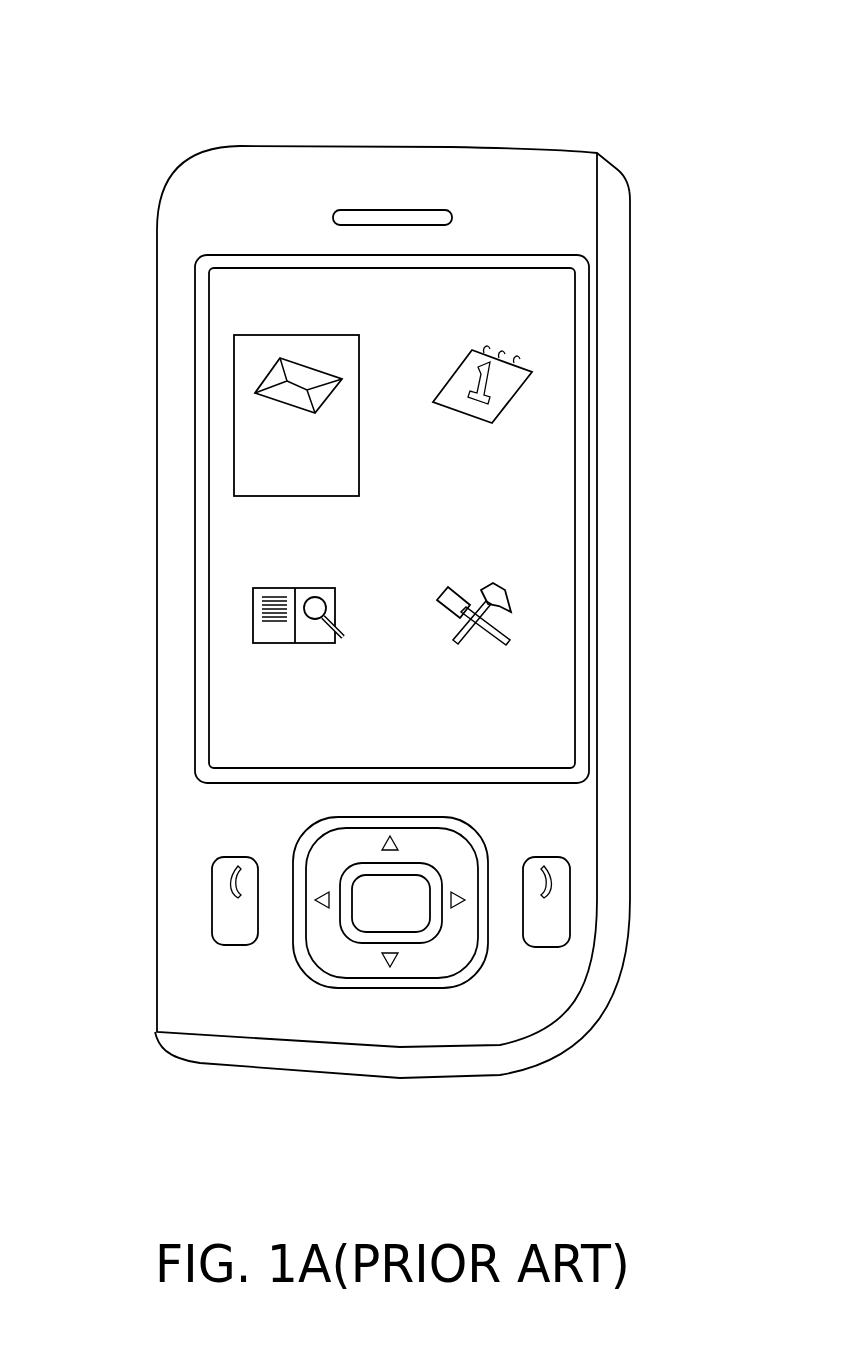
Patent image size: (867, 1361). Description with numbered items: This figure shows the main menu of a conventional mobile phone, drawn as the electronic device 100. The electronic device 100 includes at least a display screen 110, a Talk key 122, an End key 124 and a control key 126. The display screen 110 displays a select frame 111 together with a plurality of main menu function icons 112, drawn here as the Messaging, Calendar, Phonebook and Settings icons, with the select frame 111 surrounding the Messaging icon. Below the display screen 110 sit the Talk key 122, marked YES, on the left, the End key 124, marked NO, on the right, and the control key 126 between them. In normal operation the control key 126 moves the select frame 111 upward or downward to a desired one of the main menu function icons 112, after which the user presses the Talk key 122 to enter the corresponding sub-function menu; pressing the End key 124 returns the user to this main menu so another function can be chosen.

The electronic device 100 is at (104, 35).
The display screen 110 is at (560, 293).
The select frame 111 is at (242, 378).
The main menu function icons 112 is at (513, 398).
The Talk key 122 is at (222, 895).
The End key 124 is at (560, 895).
The control key 126 is at (447, 845).